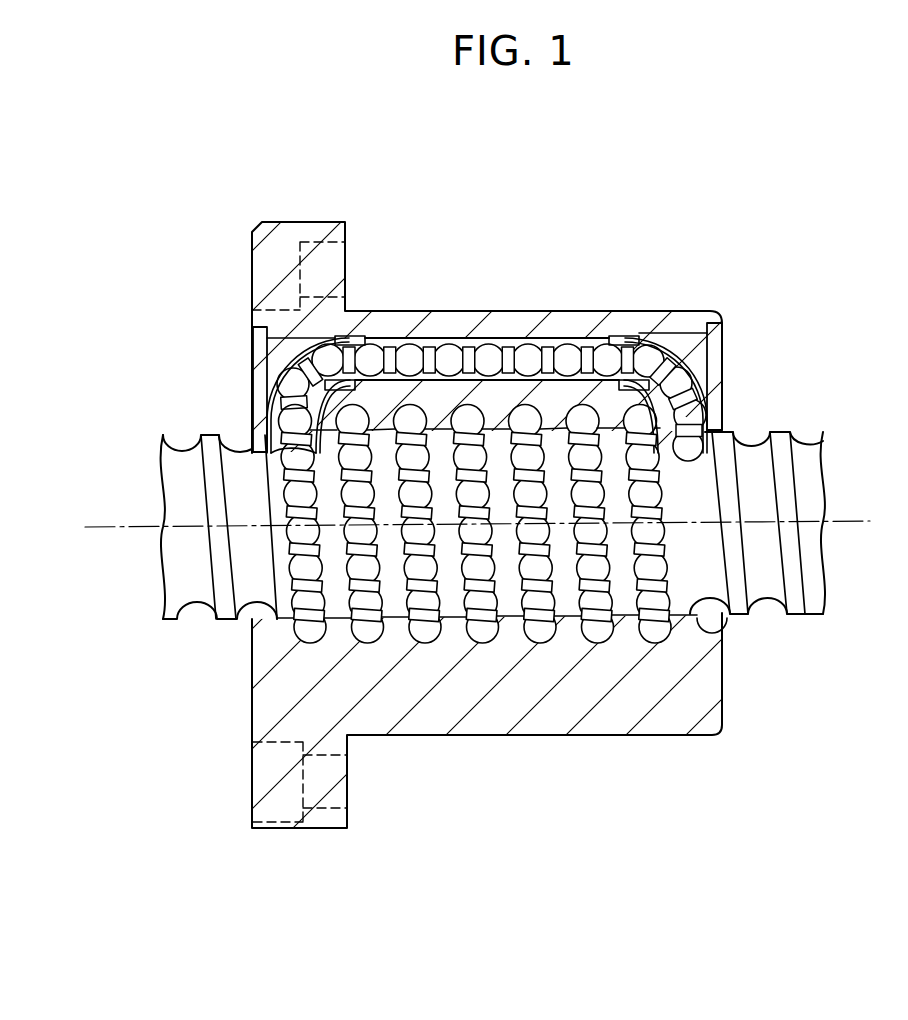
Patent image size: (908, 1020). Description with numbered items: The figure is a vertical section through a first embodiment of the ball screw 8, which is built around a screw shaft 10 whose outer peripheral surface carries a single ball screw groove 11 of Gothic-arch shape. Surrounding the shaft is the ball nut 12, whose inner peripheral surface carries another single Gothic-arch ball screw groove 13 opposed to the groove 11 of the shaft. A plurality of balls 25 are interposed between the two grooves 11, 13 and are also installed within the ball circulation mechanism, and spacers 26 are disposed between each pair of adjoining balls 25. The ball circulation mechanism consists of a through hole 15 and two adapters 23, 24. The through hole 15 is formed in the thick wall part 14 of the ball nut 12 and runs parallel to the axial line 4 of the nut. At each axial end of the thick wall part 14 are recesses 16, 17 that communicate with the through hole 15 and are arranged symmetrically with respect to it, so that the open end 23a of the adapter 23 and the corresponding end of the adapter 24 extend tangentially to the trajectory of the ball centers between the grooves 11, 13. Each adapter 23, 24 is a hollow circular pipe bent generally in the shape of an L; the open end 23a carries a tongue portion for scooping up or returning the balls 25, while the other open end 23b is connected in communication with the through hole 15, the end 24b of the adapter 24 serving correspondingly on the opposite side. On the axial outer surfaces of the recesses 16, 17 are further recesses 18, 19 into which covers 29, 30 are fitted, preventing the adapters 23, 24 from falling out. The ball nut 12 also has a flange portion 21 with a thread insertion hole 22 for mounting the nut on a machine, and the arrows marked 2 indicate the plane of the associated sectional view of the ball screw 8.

The section line II-II 2 is at (682, 298).
The axial line 4 is at (108, 527).
The ball screw 8 is at (666, 172).
The screw shaft 10 is at (805, 470).
The ball screw groove 11 is at (770, 602).
The ball nut 12 is at (487, 737).
The ball screw groove 13 is at (714, 624).
The thick wall part 14 is at (512, 325).
The through hole 15 is at (535, 338).
The recess 16 is at (258, 342).
The recess 17 is at (695, 348).
The recess for cover 18 is at (265, 394).
The recess for cover 19 is at (717, 385).
The flange portion 21 is at (327, 818).
The thread insertion hole 22 is at (282, 770).
The adapter 23 is at (262, 364).
The open end 23a is at (284, 446).
The open end 23b is at (356, 336).
The adapter 24 is at (715, 370).
The end portion of direction changing member 24b is at (611, 336).
The balls 25 is at (448, 346).
The spacers 26 is at (467, 355).
The cover 29 is at (278, 352).
The cover 30 is at (717, 340).